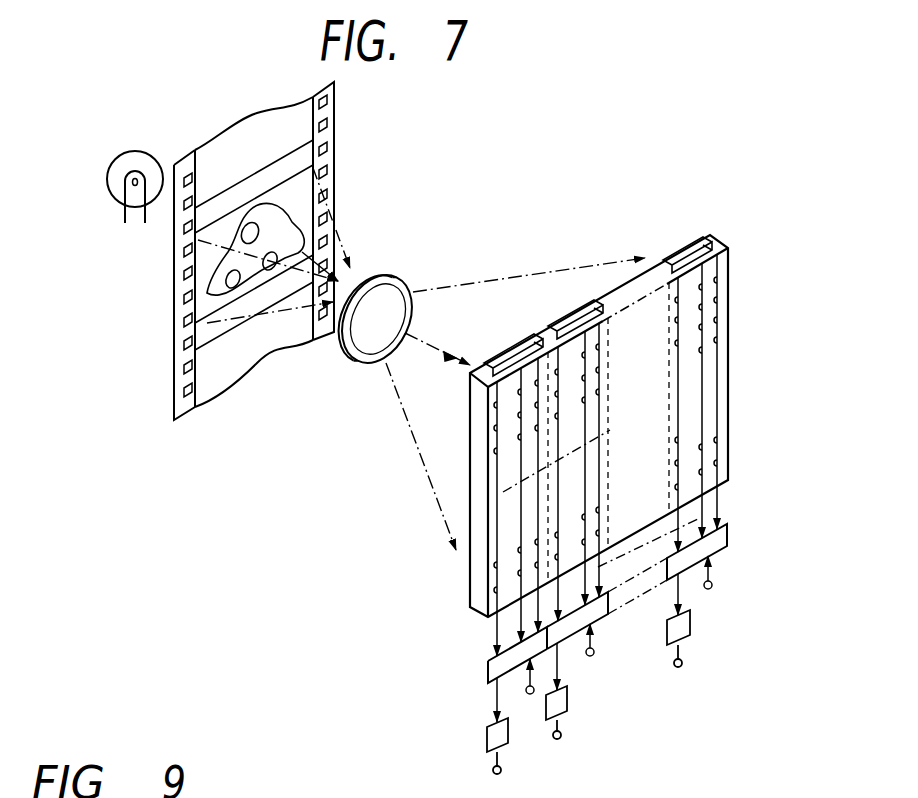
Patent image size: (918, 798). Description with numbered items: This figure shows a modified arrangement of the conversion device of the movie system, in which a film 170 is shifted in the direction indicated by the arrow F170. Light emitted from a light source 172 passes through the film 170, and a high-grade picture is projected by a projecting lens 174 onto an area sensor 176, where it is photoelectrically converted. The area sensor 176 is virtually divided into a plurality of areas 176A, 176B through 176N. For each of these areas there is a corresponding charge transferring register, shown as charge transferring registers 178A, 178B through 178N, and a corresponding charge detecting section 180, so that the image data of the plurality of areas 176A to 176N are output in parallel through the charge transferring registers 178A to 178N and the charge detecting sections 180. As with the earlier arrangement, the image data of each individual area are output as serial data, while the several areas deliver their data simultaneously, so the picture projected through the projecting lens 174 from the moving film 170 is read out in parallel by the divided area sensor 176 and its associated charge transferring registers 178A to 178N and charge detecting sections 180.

The film 170 is at (335, 158).
The arrow indicating film shifting direction F170 is at (163, 252).
The light source 172 is at (106, 188).
The projecting lens 174 is at (390, 287).
The area sensor 176 is at (730, 258).
The area 176A is at (512, 362).
The area 176B is at (570, 318).
The area 176N is at (692, 250).
The charge transferring register 178A is at (488, 669).
The charge transferring register 178B is at (600, 619).
The charge transferring register 178N is at (727, 536).
The charge detecting section 180 is at (543, 717).